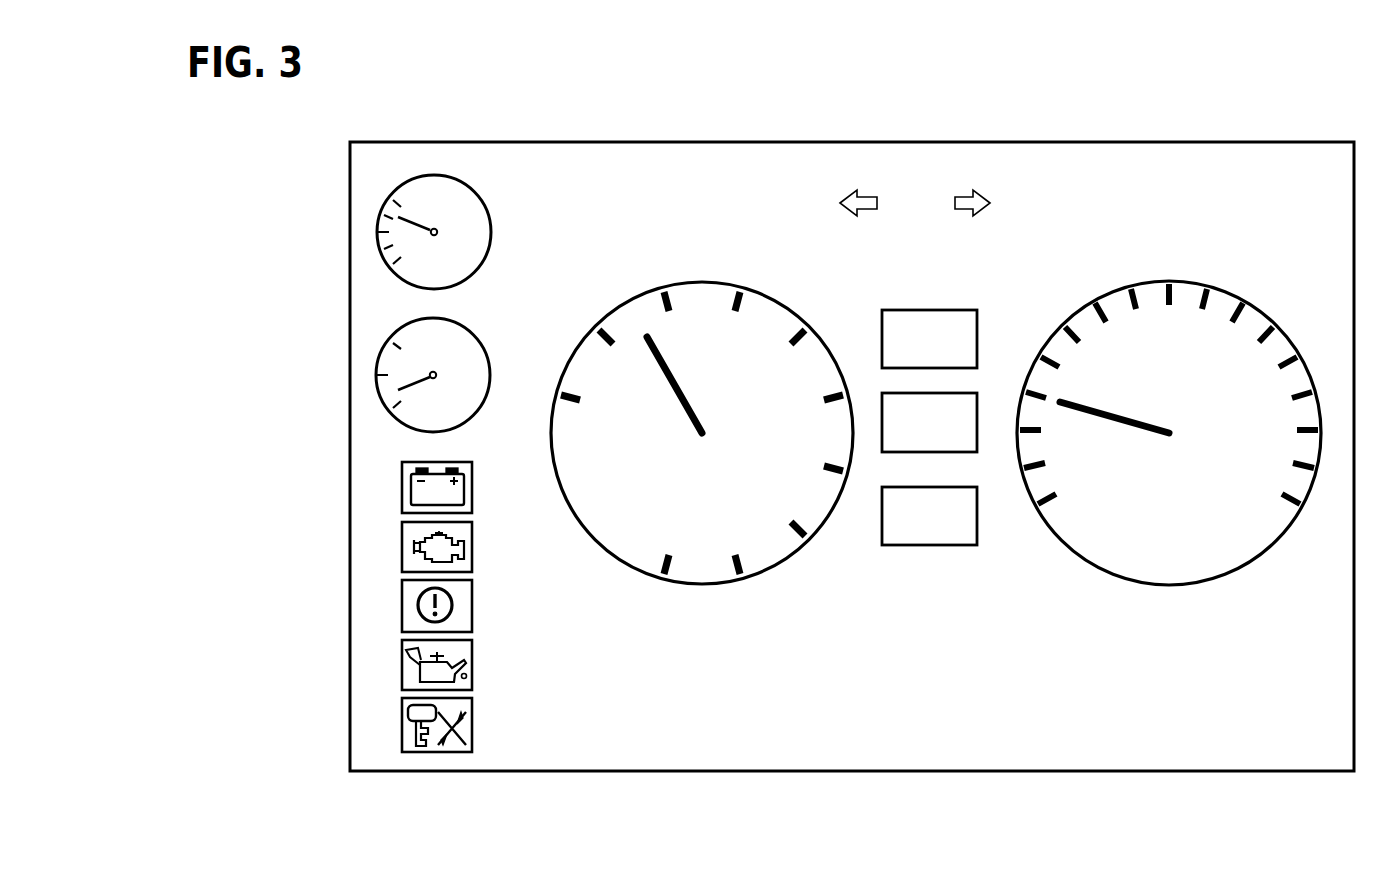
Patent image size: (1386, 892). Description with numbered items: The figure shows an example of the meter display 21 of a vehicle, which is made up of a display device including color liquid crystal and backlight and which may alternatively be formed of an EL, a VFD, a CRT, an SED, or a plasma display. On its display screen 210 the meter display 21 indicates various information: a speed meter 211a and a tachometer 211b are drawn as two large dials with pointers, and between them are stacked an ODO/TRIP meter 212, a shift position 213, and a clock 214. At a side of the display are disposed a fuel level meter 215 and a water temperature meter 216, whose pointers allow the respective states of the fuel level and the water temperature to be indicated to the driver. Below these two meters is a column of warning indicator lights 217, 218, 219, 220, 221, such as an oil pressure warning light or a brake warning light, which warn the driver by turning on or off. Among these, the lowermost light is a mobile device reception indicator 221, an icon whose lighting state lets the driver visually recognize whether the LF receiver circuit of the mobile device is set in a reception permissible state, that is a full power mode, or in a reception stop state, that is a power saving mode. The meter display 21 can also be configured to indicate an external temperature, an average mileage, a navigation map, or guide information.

The meter display 21 is at (1109, 101).
The display screen 210 is at (780, 142).
The speed meter 211a is at (627, 535).
The tachometer 211b is at (1175, 558).
The ODO/TRIP meter 212 is at (949, 310).
The shift position 213 is at (977, 435).
The clock 214 is at (927, 545).
The fuel level meter 215 is at (377, 220).
The water temperature meter 216 is at (377, 385).
The warning indicator light 217 is at (402, 487).
The warning indicator light 218 is at (402, 546).
The warning indicator light 219 is at (402, 605).
The warning indicator light 220 is at (402, 663).
The mobile device reception indicator 221 is at (402, 722).